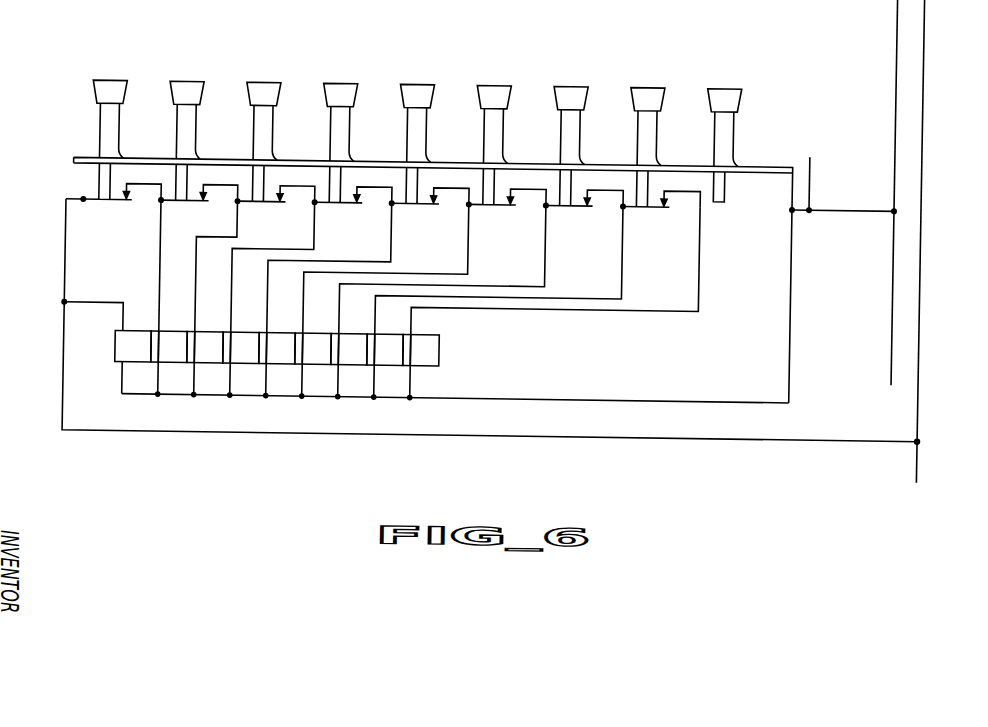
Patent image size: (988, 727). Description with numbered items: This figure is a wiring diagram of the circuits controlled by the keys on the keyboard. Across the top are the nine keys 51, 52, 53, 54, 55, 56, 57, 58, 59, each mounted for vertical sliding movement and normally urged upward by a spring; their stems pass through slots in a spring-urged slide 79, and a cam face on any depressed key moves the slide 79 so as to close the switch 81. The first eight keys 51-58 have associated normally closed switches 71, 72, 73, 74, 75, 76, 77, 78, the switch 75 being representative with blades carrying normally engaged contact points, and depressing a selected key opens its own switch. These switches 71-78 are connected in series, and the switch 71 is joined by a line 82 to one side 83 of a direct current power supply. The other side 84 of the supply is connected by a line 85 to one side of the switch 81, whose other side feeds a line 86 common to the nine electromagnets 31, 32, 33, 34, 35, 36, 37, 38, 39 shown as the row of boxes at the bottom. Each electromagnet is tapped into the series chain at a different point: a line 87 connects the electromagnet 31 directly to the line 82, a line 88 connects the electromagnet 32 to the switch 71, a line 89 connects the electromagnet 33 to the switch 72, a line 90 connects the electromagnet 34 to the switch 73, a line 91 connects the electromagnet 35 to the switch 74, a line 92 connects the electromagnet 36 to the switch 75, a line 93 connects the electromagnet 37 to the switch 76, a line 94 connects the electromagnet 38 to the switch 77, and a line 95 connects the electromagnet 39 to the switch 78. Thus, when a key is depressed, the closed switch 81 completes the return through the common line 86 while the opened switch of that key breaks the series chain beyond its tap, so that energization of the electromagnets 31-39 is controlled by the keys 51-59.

The electromagnet 31 is at (144, 358).
The electromagnet 32 is at (180, 358).
The electromagnet 33 is at (216, 358).
The electromagnet 34 is at (252, 358).
The electromagnet 35 is at (288, 358).
The electromagnet 36 is at (324, 358).
The electromagnet 37 is at (360, 358).
The electromagnet 38 is at (396, 358).
The electromagnet 39 is at (432, 358).
The key 51 is at (105, 80).
The key 52 is at (182, 80).
The key 53 is at (259, 80).
The key 54 is at (336, 80).
The key 55 is at (412, 80).
The key 56 is at (489, 80).
The key 57 is at (566, 80).
The key 58 is at (643, 80).
The key 59 is at (720, 80).
The switch 71 is at (122, 203).
The switch 72 is at (199, 203).
The switch 73 is at (275, 203).
The switch 74 is at (352, 203).
The switch 75 is at (429, 203).
The switch 76 is at (506, 203).
The switch 77 is at (583, 203).
The switch 78 is at (659, 203).
The slide 79 is at (749, 158).
The switch 81 is at (797, 151).
The line 82 is at (66, 260).
The one side of direct current power supply 83 is at (923, 335).
The other side of power supply 84 is at (894, 317).
The line 85 is at (830, 200).
The line 86 is at (653, 393).
The line 87 is at (90, 302).
The line 88 is at (161, 260).
The line 89 is at (197, 276).
The line 90 is at (233, 292).
The line 91 is at (269, 315).
The line 92 is at (305, 316).
The line 93 is at (341, 318).
The line 94 is at (377, 328).
The line 95 is at (413, 328).